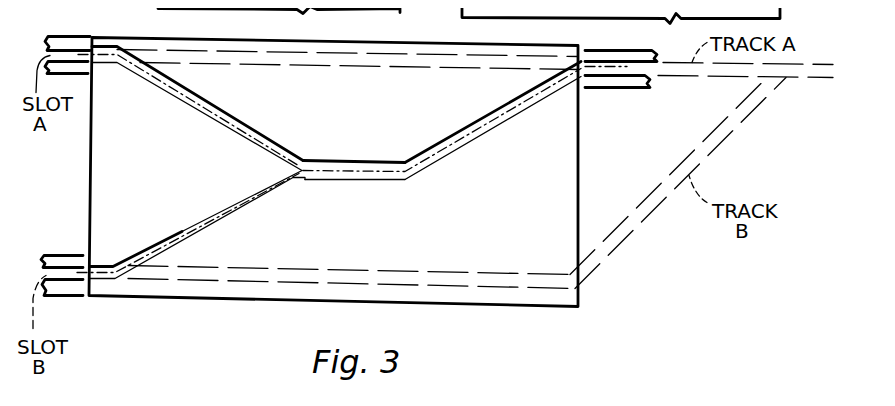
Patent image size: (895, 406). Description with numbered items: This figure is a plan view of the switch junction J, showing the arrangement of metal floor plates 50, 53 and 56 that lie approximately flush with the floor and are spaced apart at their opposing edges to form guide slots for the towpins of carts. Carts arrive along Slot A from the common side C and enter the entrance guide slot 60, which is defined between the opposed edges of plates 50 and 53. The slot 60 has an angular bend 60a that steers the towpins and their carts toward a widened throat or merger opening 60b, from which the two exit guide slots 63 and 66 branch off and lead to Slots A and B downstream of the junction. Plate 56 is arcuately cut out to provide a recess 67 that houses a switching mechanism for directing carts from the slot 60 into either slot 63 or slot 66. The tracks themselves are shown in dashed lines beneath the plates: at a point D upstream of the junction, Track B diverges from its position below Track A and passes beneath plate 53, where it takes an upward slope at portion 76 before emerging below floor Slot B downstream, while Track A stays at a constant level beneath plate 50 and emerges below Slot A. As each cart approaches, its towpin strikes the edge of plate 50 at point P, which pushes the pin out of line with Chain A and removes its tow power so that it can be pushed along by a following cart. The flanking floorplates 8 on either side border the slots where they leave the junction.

The track rails / slot guides 8 is at (71, 35).
The exit guide slot 63 is at (110, 45).
The exit guide slot 66 is at (100, 274).
The entrance guide slot 60 is at (341, 178).
The angular bend 60a is at (407, 181).
The widened throat or merger opening 60b is at (303, 160).
The upwardly slanting portion of Track B 76 is at (350, 266).
The metal floor plate 56 is at (143, 127).
The recess 67 is at (187, 107).
The metal floor plate 50 is at (382, 104).
The metal floor plate 53 is at (527, 250).
The point of towpin engagement P is at (562, 62).
The switch junction J is at (253, 312).
The common side C is at (822, 53).
The divergence point D is at (792, 91).